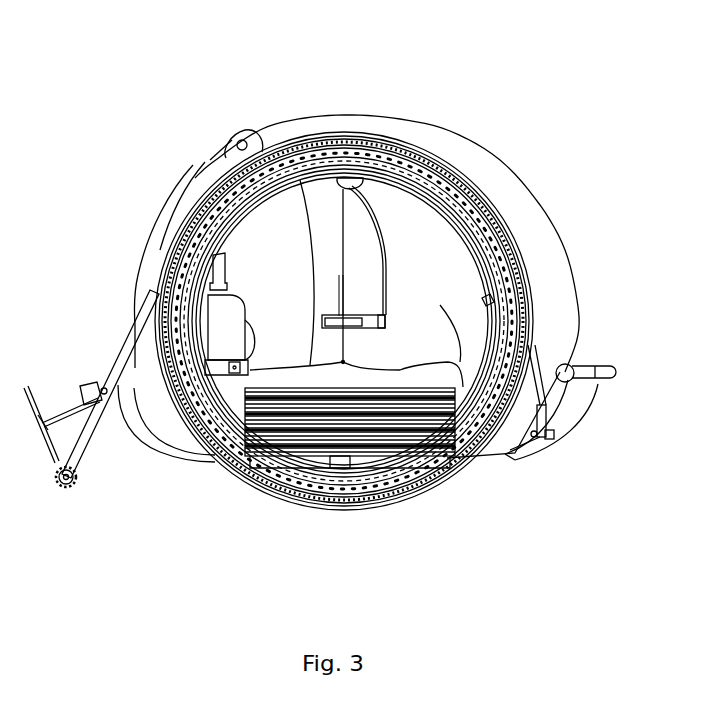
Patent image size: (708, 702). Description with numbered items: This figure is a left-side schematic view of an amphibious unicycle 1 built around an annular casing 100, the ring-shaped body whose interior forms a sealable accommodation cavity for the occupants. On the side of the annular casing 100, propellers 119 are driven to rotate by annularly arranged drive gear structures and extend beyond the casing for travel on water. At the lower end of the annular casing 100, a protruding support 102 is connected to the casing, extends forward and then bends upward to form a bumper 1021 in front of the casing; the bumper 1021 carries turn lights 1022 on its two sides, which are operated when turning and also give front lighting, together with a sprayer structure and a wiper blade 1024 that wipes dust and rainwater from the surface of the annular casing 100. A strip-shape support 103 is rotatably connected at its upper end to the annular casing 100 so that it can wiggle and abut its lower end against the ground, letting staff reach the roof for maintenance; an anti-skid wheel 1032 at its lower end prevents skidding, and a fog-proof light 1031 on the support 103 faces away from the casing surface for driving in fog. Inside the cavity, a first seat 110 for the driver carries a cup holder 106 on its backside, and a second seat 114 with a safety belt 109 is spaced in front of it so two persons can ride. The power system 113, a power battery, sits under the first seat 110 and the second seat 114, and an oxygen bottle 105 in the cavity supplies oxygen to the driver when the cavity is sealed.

The amphibious unicycle 1 is at (458, 107).
The annular casing 100 is at (525, 204).
The protruding support 102 is at (574, 432).
The bumper 1021 is at (606, 368).
The turn lights 1022 is at (573, 382).
The wiper blade 1024 is at (517, 455).
The strip-shape support 103 is at (108, 352).
The fog-proof light 1031 is at (80, 386).
The anti-skid wheel 1032 is at (76, 482).
The oxygen bottle 105 is at (162, 285).
The cup holder 106 is at (225, 320).
The safety belt 109 is at (375, 222).
The first seat 110 is at (300, 180).
The power system 113 is at (318, 430).
The second seat 114 is at (412, 372).
The propellers 119 is at (55, 423).